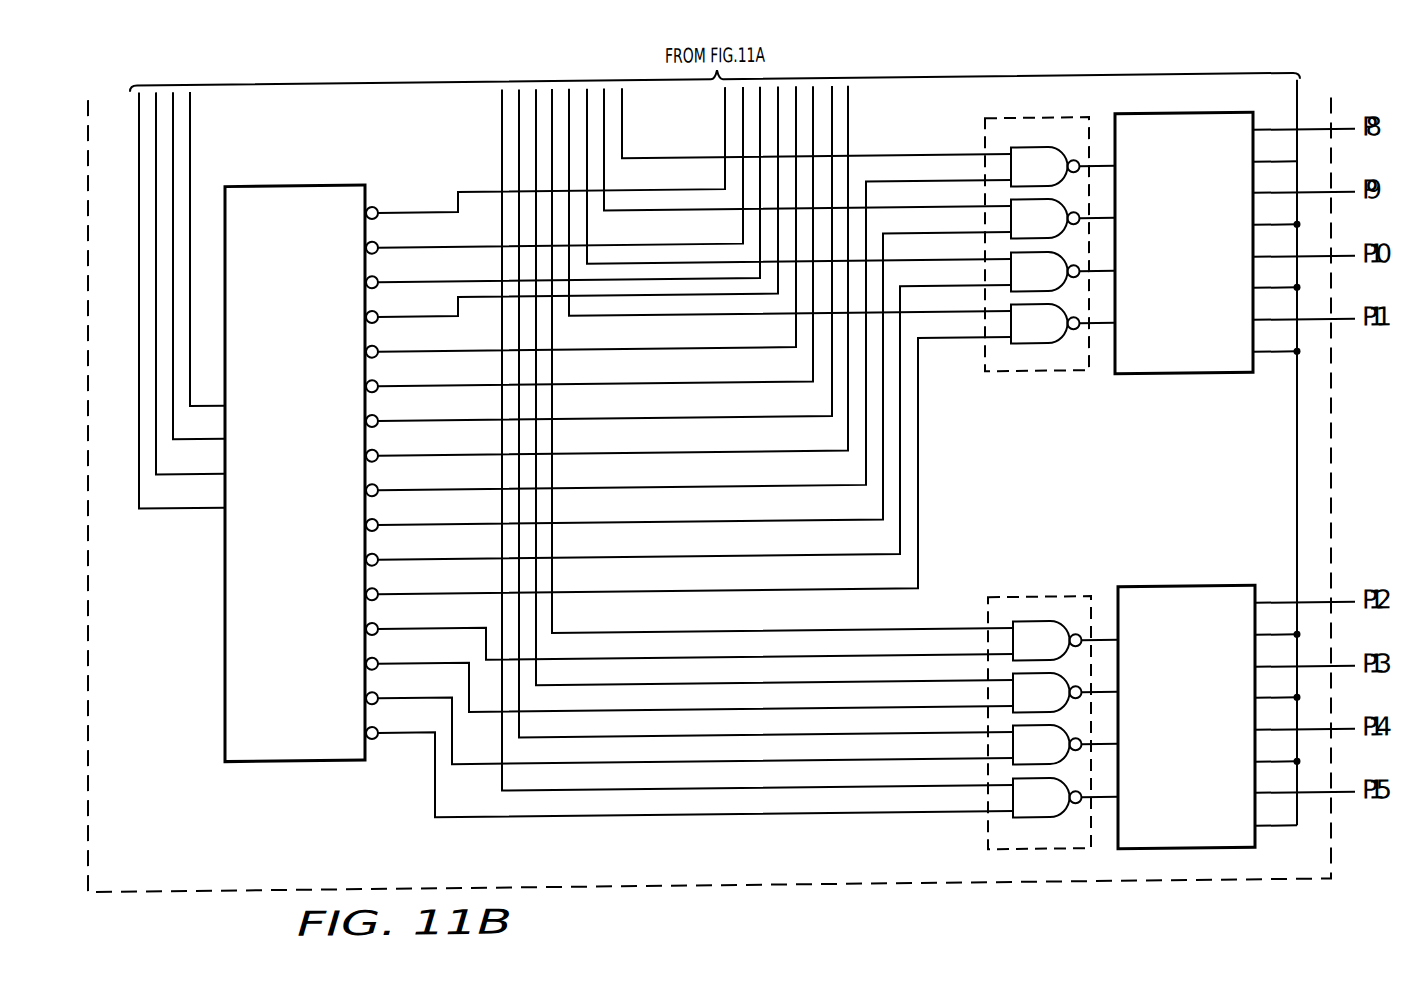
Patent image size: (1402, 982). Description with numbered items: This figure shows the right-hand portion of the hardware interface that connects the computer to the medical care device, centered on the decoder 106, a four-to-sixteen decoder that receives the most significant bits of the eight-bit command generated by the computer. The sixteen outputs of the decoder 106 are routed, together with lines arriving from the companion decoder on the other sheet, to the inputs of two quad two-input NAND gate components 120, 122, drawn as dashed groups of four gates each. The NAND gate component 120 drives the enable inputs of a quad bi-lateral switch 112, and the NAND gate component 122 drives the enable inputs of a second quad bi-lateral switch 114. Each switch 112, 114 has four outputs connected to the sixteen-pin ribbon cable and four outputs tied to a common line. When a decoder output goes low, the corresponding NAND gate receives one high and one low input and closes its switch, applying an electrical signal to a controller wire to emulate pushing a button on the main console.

The decoder 106 is at (288, 760).
The quad bi-lateral switch 112 is at (1186, 382).
The quad bi-lateral switch 114 is at (1178, 595).
The quad 2-input NAND gate component 120 is at (1011, 382).
The quad 2-input NAND gate component 122 is at (980, 847).